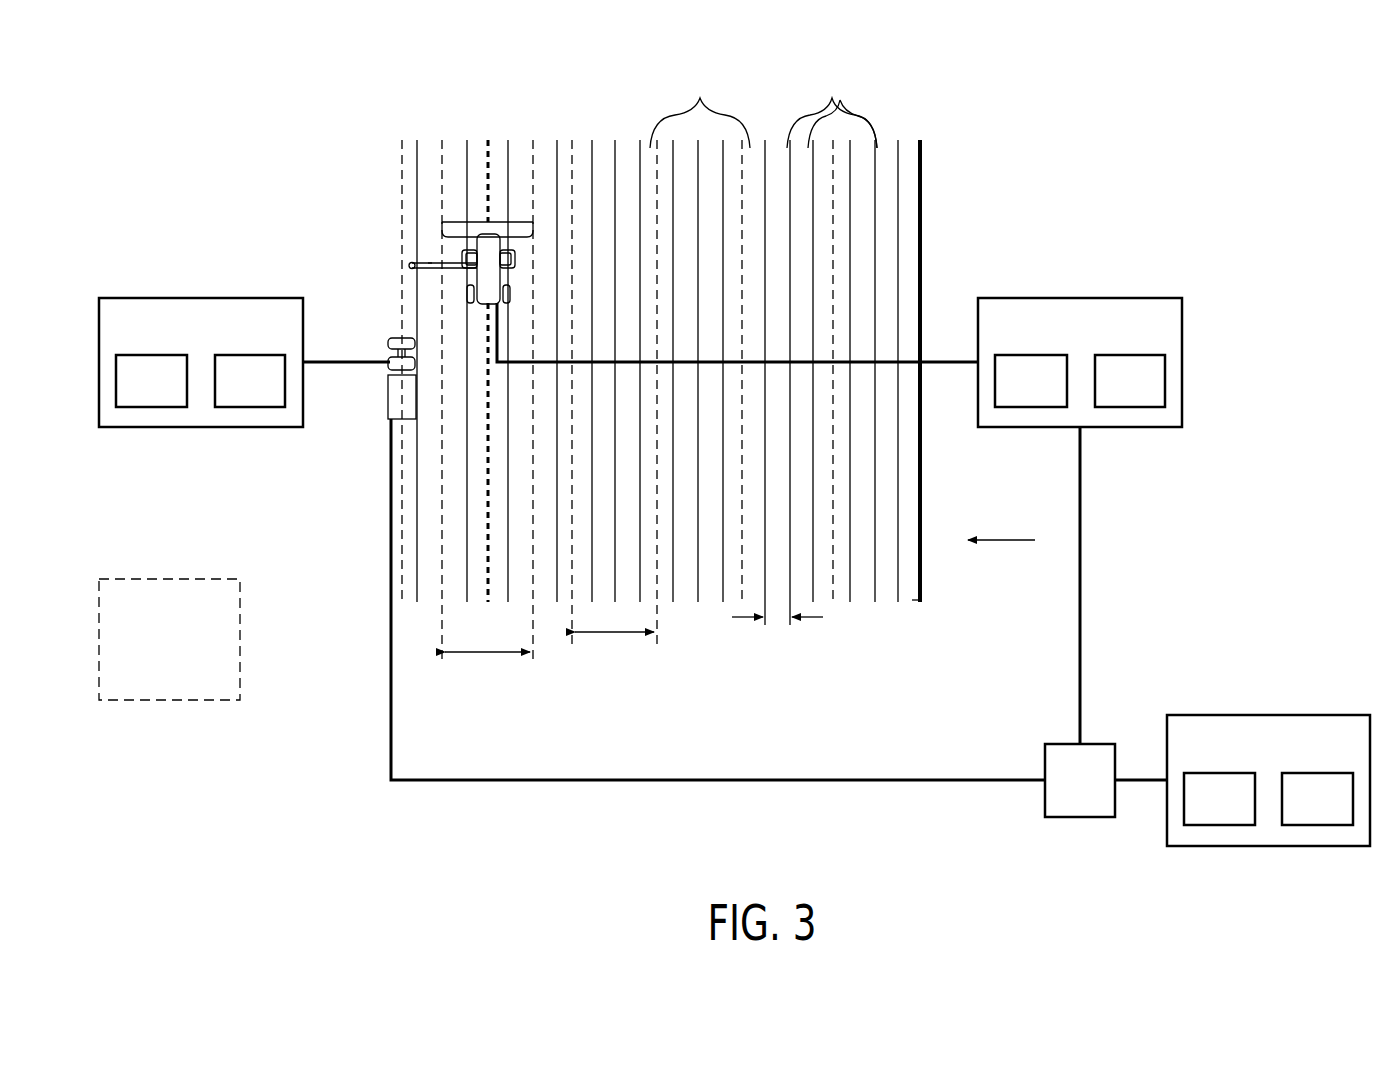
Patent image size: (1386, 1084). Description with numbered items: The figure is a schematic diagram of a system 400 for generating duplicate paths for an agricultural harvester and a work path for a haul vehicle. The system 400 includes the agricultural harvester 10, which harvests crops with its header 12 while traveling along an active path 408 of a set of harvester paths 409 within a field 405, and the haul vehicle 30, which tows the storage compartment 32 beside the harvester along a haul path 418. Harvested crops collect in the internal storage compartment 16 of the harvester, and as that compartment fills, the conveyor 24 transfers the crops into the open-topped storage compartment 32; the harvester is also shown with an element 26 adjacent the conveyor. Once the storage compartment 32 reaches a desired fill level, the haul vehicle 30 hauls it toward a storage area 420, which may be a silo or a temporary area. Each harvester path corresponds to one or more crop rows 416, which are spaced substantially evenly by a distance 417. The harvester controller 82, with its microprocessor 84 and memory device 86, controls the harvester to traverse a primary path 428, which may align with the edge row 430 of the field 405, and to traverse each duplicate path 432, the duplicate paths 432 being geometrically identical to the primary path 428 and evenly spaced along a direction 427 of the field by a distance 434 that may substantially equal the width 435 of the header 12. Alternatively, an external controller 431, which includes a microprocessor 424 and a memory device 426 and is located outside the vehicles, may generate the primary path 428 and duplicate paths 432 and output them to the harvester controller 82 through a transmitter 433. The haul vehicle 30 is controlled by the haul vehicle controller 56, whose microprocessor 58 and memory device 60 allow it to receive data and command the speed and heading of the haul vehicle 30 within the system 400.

The system 400 is at (356, 95).
The agricultural harvester 10 is at (475, 228).
The header 12 is at (518, 232).
The internal storage compartment 16 is at (487, 278).
The conveyor 24 is at (430, 262).
The supply line 26 is at (410, 263).
The haul vehicle 30 is at (398, 339).
The storage compartment 32 is at (387, 400).
The haul vehicle controller 56 is at (200, 298).
The microprocessor 58 is at (250, 407).
The memory device 60 is at (151, 407).
The harvester controller 82 is at (1085, 298).
The microprocessor 84 is at (1030, 407).
The memory device 86 is at (1135, 407).
The field 405 is at (910, 125).
The active path 408 is at (497, 220).
The harvester paths 409 is at (486, 150).
The crop rows 416 is at (821, 346).
The distance 417 is at (817, 618).
The haul path 418 is at (400, 169).
The storage area 420 is at (149, 658).
The microprocessor 424 is at (1220, 825).
The memory device 426 is at (1320, 825).
The direction 427 is at (1005, 541).
The primary path 428 is at (921, 180).
The edge row 430 is at (921, 222).
The external controller 431 is at (1270, 715).
The duplicate paths 432 is at (700, 356).
The transmitter 433 is at (1055, 744).
The distance 434 is at (614, 633).
The width 435 is at (487, 653).